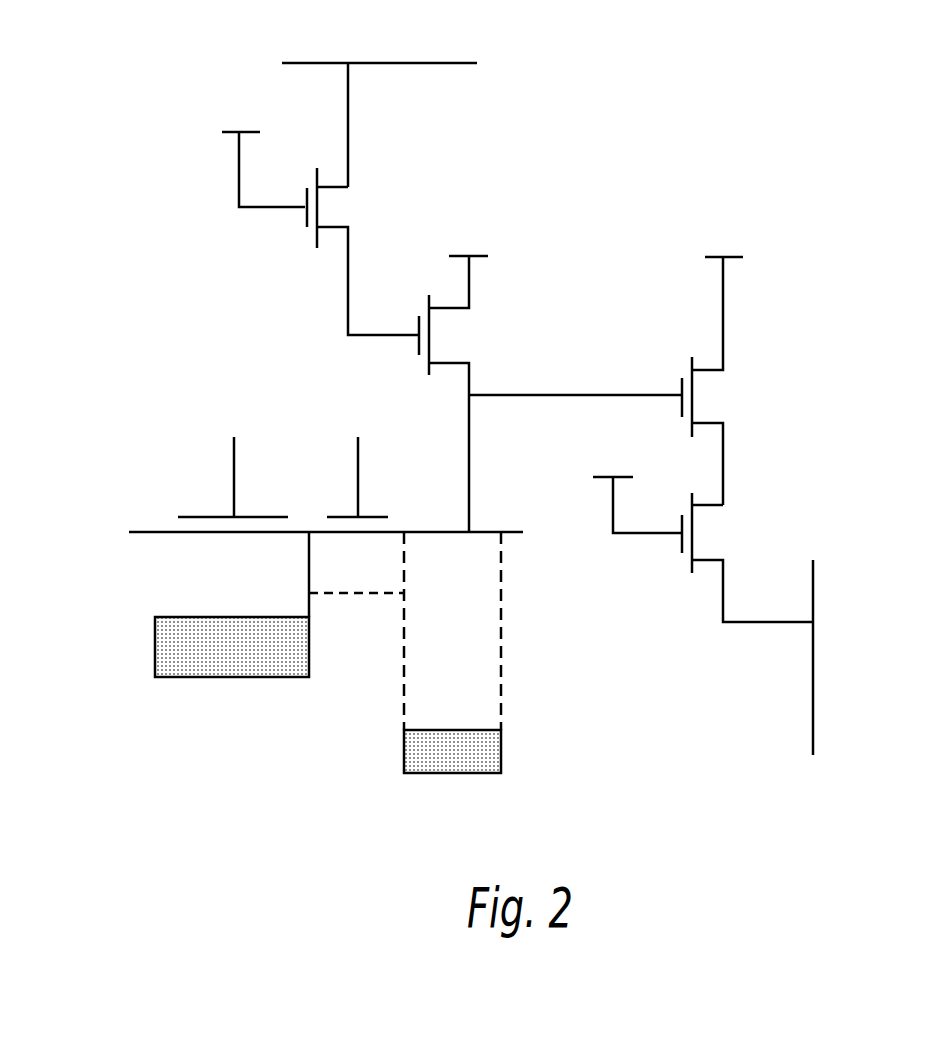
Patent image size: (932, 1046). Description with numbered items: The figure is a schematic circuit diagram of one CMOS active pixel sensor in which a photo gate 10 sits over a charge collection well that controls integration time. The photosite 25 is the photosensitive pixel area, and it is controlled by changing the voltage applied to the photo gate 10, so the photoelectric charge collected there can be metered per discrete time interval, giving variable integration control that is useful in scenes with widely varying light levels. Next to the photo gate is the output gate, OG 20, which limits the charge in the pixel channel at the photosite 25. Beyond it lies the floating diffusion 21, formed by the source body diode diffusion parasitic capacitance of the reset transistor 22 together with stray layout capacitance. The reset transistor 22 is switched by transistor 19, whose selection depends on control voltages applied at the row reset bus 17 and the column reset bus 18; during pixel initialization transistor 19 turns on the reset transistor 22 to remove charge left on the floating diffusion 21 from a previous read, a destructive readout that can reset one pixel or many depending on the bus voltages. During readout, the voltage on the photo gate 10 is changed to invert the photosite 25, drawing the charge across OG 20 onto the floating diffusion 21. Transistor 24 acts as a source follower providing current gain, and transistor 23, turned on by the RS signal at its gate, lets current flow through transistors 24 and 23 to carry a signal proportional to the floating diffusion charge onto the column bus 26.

The photo gate 10 is at (179, 490).
The row reset bus 17 is at (224, 152).
The column reset bus 18 is at (372, 87).
The transistor 19 is at (288, 226).
The output gate 20 is at (376, 492).
The floating diffusion 21 is at (458, 657).
The reset transistor 22 is at (481, 316).
The transistor 23 is at (740, 530).
The transistor 24 is at (740, 394).
The photosite 25 is at (198, 590).
The column bus 26 is at (841, 581).